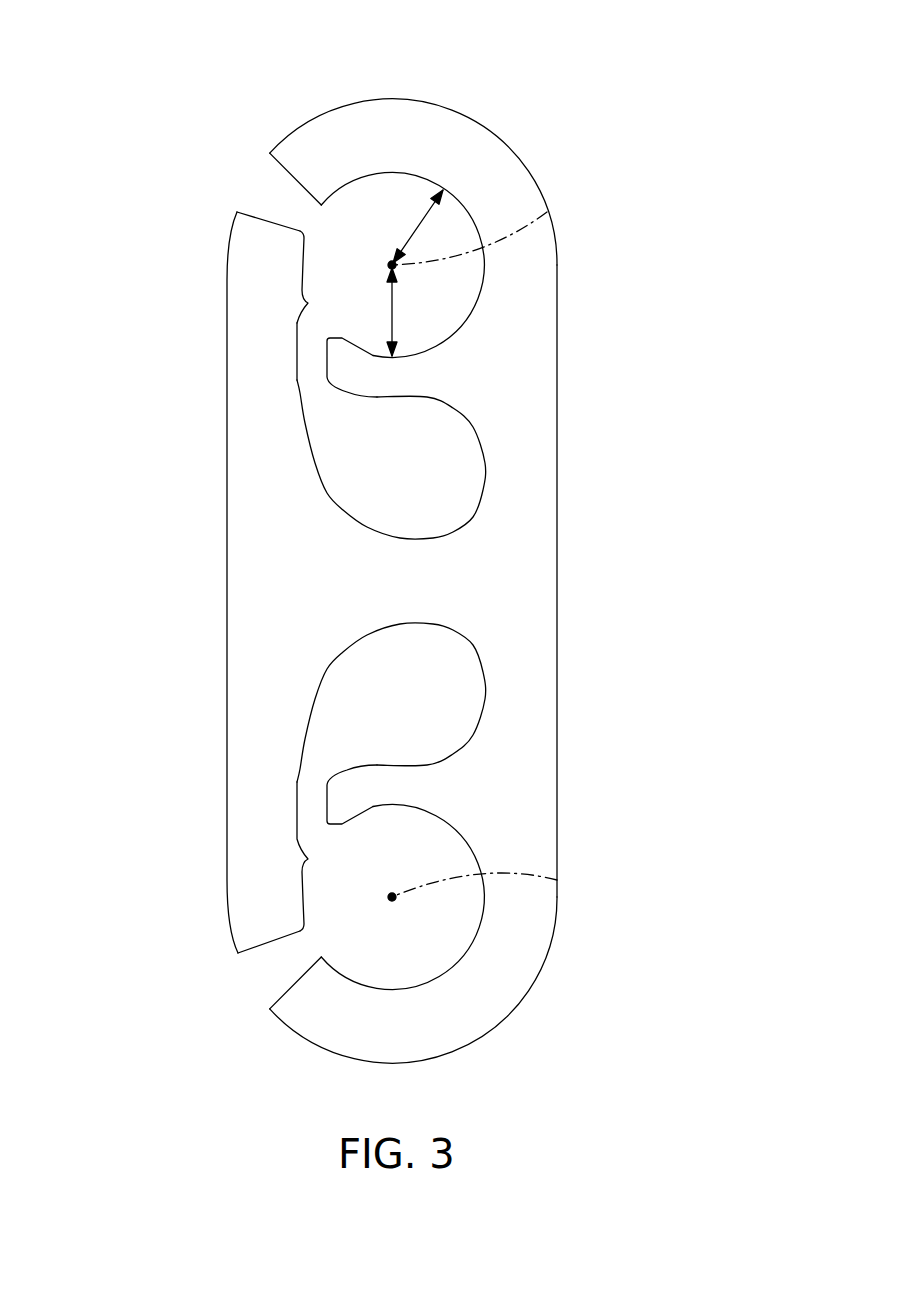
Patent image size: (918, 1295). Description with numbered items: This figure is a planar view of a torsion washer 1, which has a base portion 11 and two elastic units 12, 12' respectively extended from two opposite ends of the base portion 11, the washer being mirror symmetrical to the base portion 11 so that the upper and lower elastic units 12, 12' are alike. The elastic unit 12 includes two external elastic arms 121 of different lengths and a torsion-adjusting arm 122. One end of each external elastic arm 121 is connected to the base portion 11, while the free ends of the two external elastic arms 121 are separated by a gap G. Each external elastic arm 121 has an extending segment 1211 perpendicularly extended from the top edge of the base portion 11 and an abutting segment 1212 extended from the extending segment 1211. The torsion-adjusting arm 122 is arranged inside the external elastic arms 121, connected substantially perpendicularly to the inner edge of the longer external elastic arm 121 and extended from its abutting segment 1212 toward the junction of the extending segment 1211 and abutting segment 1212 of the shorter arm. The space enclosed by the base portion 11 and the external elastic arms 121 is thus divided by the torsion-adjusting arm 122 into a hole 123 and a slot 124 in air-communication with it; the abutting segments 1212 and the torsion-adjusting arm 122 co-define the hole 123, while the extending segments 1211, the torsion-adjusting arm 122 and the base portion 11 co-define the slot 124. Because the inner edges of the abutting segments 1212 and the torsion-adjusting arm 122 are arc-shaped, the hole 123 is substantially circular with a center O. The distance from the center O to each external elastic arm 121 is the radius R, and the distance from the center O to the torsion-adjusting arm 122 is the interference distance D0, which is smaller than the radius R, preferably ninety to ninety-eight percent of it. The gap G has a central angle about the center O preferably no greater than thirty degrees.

The torsion washer 1 is at (222, 37).
The base portion 11 is at (417, 587).
The elastic unit 12 is at (442, 182).
The elastic unit 12' is at (443, 934).
The external elastic arm 121 is at (125, 263).
The extending segment 1211 is at (267, 367).
The abutting segment 1212 is at (270, 270).
The torsion-adjusting arm 122 is at (373, 380).
The hole 123 is at (363, 213).
The slot 124 is at (442, 463).
The gap G is at (285, 205).
The center O is at (547, 212).
The radius R is at (418, 226).
The interference distance D0 is at (372, 312).